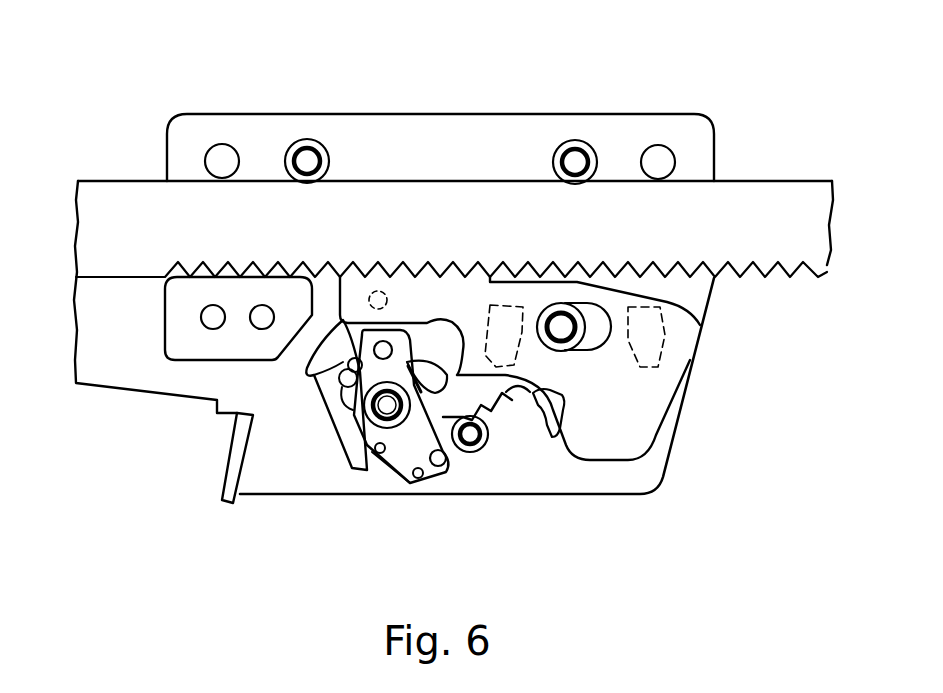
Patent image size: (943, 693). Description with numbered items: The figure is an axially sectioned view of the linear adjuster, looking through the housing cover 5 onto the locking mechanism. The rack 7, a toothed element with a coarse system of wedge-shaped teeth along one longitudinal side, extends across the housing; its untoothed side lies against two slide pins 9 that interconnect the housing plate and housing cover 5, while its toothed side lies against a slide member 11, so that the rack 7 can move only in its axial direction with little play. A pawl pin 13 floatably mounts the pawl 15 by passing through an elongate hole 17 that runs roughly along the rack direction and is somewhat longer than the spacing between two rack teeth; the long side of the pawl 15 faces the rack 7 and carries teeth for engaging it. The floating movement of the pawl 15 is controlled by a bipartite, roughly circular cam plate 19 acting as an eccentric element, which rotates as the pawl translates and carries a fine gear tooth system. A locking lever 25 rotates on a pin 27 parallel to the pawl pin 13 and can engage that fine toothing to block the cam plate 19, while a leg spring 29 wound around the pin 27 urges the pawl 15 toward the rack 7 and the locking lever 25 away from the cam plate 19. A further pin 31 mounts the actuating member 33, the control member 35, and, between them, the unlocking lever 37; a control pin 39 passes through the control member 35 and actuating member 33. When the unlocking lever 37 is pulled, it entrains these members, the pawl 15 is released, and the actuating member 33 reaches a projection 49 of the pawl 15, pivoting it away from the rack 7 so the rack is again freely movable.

The housing cover 5 is at (437, 150).
The rack 7 is at (177, 225).
The slide pins 9 is at (307, 160).
The slide member 11 is at (187, 335).
The pawl pin 13 is at (578, 350).
The pawl 15 is at (597, 362).
The elongate hole 17 is at (598, 322).
The cam plate 19 is at (548, 442).
The locking lever 25 is at (452, 450).
The pin 27 is at (483, 448).
The leg spring 29 is at (500, 418).
The pin 31 is at (387, 405).
The actuating member 33 is at (438, 465).
The control member 35 is at (338, 348).
The unlocking lever 37 is at (420, 432).
The control pin 39 is at (380, 352).
The projection 49 is at (570, 405).